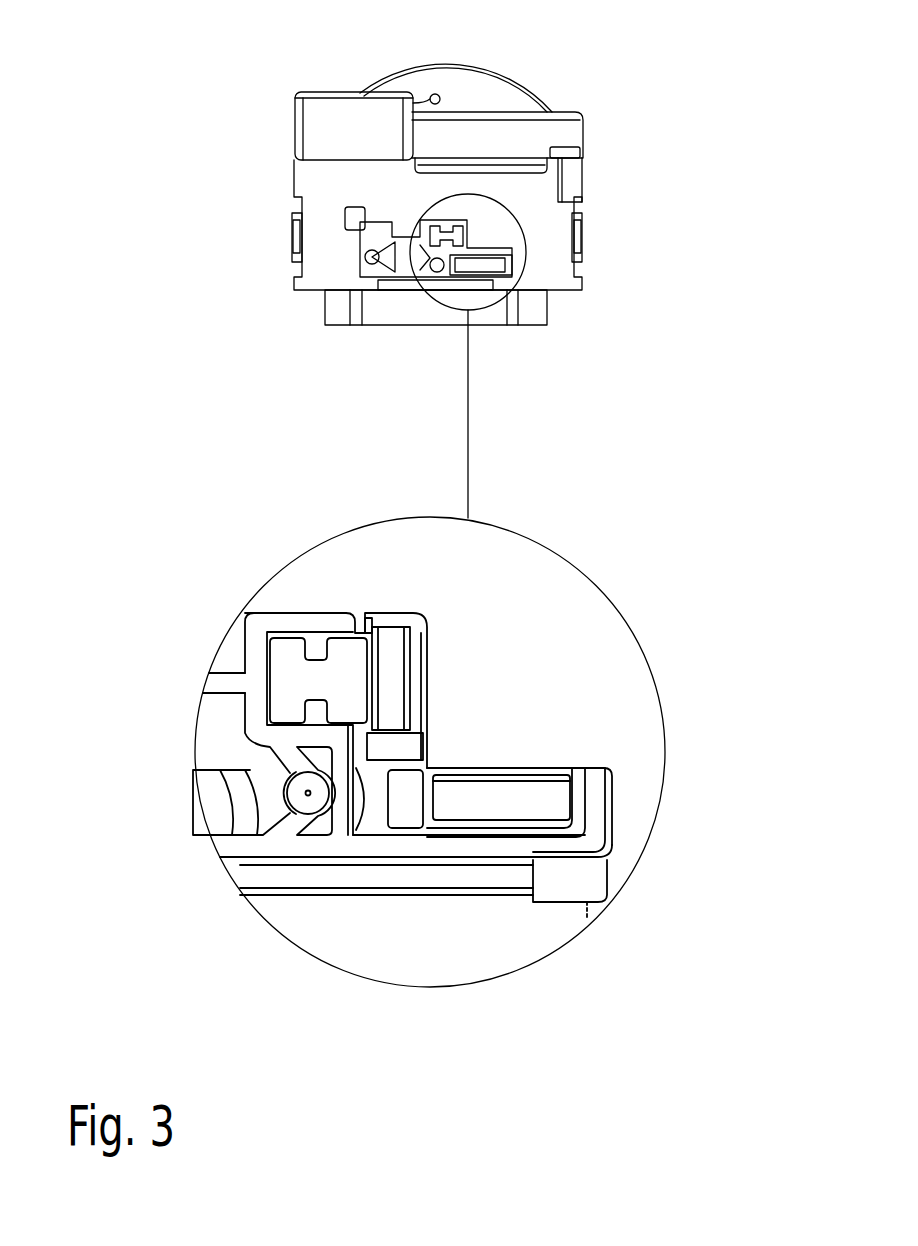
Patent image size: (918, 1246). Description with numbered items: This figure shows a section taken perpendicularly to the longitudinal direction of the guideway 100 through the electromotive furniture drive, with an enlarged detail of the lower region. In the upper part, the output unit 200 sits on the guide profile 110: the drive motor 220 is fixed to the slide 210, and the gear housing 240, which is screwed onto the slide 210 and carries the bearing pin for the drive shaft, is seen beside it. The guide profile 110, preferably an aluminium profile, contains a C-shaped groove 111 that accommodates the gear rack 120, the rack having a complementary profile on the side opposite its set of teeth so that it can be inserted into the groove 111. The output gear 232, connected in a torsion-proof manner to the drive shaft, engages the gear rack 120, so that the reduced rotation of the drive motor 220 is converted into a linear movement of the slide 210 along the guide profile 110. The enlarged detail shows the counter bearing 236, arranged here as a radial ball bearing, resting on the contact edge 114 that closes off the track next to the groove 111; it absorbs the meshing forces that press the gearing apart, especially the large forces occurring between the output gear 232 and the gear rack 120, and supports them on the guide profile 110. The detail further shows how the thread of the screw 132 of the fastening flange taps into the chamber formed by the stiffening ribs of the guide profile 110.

The guideway 100 is at (305, 333).
The guide profile 110 is at (540, 310).
The groove 111 is at (271, 615).
The contact edge 114 is at (592, 802).
The gear rack 120 is at (290, 680).
The screw 132 is at (297, 790).
The output unit 200 is at (630, 117).
The slide 210 is at (327, 187).
The drive motor 220 is at (500, 90).
The output gear 232 is at (420, 648).
The counter bearing 236 is at (403, 805).
The gear housing 240 is at (335, 115).